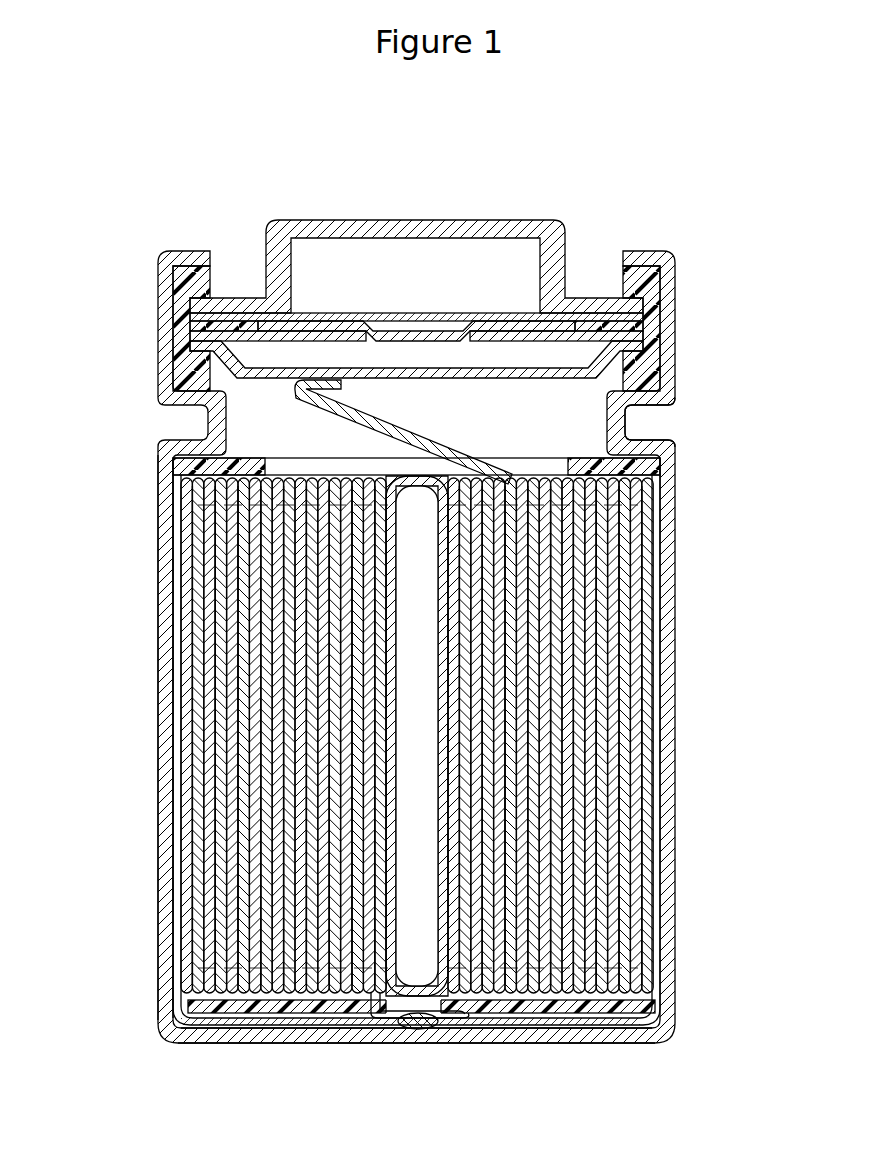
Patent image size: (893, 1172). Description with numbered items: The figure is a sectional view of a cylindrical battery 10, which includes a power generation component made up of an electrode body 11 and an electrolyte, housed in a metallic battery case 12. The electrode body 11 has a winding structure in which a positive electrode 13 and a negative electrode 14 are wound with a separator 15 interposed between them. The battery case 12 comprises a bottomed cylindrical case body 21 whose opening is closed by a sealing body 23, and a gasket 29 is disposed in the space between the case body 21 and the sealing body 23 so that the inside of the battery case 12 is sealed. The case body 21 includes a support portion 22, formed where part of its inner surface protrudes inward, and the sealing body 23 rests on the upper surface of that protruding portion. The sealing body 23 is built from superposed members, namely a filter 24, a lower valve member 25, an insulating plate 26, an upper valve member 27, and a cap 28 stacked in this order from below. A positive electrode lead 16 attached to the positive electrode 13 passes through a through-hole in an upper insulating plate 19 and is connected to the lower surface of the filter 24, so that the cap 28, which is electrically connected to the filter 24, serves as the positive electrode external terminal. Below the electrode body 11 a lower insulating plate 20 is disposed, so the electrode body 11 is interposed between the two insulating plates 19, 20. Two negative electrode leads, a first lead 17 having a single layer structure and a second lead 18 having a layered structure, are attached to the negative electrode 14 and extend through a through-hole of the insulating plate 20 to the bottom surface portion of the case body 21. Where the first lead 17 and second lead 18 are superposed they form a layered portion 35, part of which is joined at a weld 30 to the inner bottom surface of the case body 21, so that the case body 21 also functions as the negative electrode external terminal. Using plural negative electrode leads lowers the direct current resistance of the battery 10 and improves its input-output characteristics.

The battery 10 is at (641, 160).
The electrode body 11 is at (498, 736).
The battery case 12 is at (668, 628).
The positive electrode 13 is at (607, 702).
The negative electrode 14 is at (625, 743).
The separator 15 is at (620, 790).
The positive electrode lead 16 is at (300, 410).
The first lead 17 is at (232, 1032).
The second lead 18 is at (337, 1028).
The insulating plate 19 is at (650, 460).
The insulating plate 20 is at (653, 997).
The case body 21 is at (150, 665).
The support portion 22 is at (627, 403).
The sealing body 23 is at (416, 263).
The filter 24 is at (497, 358).
The lower valve member 25 is at (477, 325).
The insulating plate 26 is at (603, 287).
The upper valve member 27 is at (357, 304).
The cap 28 is at (314, 220).
The gasket 29 is at (203, 268).
The weld 30 is at (402, 1024).
The layered portion 35 is at (455, 1014).